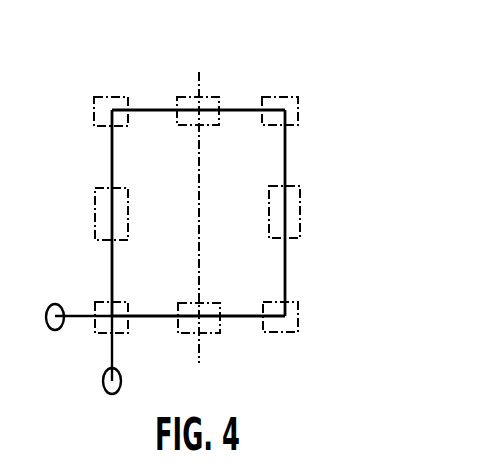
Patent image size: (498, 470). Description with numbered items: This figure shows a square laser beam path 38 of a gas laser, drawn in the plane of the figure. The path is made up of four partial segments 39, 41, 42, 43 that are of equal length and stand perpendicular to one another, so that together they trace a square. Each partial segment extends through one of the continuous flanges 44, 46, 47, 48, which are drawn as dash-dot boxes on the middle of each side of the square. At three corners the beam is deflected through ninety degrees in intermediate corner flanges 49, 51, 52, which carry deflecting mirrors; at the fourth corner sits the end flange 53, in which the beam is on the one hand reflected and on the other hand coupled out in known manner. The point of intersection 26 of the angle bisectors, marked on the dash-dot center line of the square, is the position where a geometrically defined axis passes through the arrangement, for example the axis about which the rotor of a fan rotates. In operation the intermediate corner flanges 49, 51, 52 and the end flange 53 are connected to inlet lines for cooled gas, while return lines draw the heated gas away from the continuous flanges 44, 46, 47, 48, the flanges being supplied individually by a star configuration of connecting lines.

The point of intersection 26 is at (200, 216).
The square laser beam path 38 is at (285, 160).
The partial segment 39 is at (285, 257).
The partial segment 41 is at (240, 316).
The partial segment 42 is at (112, 280).
The partial segment 43 is at (241, 110).
The continuous flange 44 is at (300, 204).
The continuous flange 46 is at (212, 302).
The continuous flange 47 is at (95, 208).
The continuous flange 48 is at (197, 88).
The intermediate corner flange 49 is at (297, 110).
The intermediate corner flange 51 is at (298, 322).
The intermediate corner flange 52 is at (104, 97).
The end flange 53 is at (128, 332).